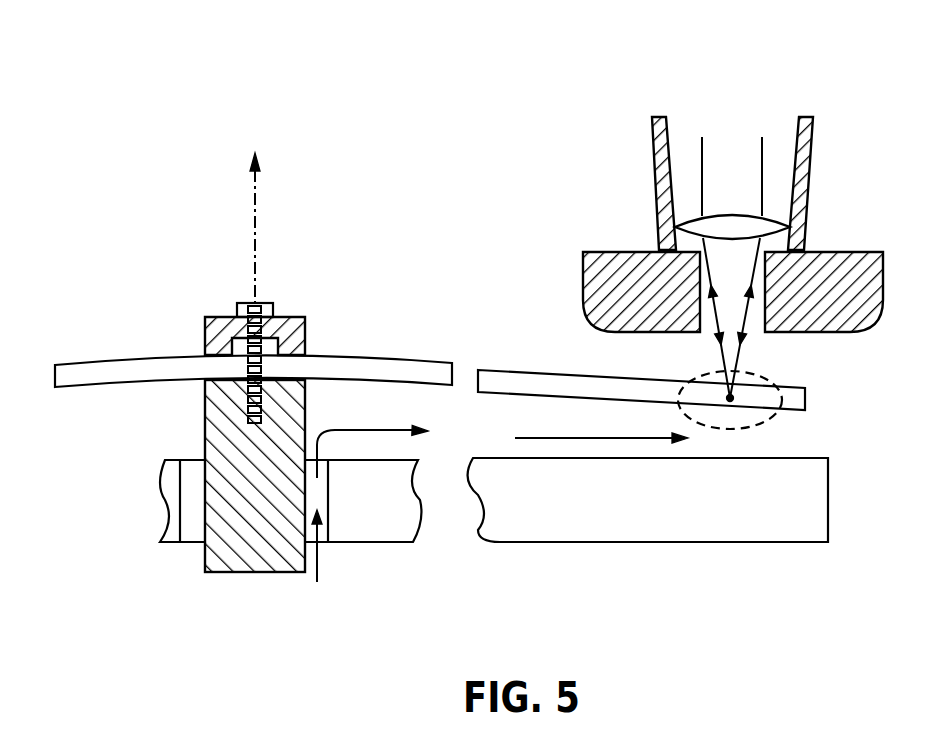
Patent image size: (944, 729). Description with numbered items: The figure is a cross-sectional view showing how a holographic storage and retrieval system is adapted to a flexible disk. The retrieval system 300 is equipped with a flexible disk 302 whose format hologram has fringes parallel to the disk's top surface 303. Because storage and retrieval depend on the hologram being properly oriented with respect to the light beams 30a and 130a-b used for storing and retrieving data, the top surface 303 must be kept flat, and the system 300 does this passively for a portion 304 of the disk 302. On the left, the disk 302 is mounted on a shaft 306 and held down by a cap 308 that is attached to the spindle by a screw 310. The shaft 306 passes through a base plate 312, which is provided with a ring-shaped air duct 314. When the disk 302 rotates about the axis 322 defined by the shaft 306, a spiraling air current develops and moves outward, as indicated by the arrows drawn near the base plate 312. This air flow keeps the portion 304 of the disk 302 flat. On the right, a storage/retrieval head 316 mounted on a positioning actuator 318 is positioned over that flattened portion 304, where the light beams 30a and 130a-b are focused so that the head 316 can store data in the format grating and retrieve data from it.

The retrieval system 300 is at (105, 126).
The flexible disk 302 is at (378, 372).
The top surface 303 is at (503, 370).
The portion 304 is at (692, 380).
The shaft 306 is at (205, 411).
The cap 308 is at (302, 315).
The screw 310 is at (245, 302).
The base plate 312 is at (380, 542).
The ring-shaped air duct 314 is at (195, 545).
The storage/retrieval head 316 is at (813, 153).
The positioning actuator 318 is at (598, 252).
The axis 322 is at (253, 220).
The light beam 30a is at (700, 135).
The light beams 130a-b is at (762, 135).